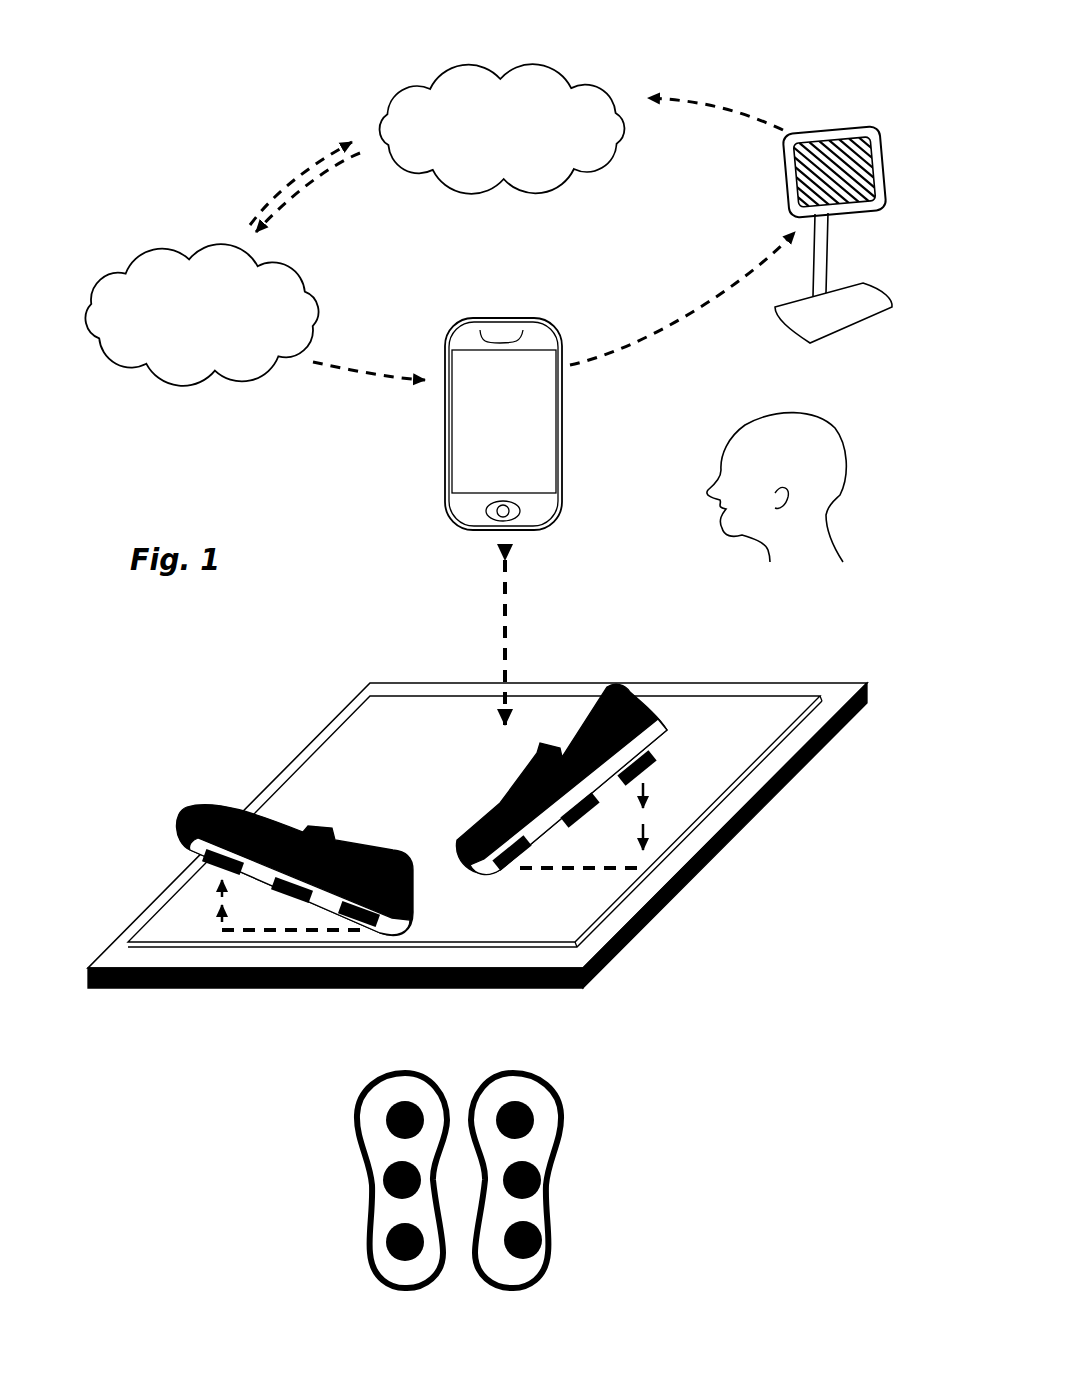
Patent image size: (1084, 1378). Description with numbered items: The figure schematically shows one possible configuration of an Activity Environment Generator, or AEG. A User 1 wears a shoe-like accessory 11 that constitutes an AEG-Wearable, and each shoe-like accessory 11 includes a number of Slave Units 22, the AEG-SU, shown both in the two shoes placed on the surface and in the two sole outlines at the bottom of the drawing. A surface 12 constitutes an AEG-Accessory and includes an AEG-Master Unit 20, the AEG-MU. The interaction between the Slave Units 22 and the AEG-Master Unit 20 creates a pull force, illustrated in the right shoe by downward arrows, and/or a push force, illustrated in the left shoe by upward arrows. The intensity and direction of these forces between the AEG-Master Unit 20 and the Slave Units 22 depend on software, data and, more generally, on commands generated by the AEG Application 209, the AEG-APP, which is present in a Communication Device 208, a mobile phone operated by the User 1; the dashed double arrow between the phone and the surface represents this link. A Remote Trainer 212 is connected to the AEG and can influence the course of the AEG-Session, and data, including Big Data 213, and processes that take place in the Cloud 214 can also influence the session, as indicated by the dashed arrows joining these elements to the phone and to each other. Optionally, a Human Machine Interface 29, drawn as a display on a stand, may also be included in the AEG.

The User 1 is at (856, 420).
The shoe-like accessory 11 is at (193, 797).
The surface 12 is at (840, 690).
The AEG-Master Unit 20 is at (400, 742).
The Slave Units 22 is at (200, 853).
The Human Machine Interface 29 is at (830, 122).
The Communication Device 208 is at (578, 472).
The AEG Application 209 is at (468, 388).
The Remote Trainer 212 is at (183, 243).
The Big Data 213 is at (568, 78).
The Cloud 214 is at (345, 150).